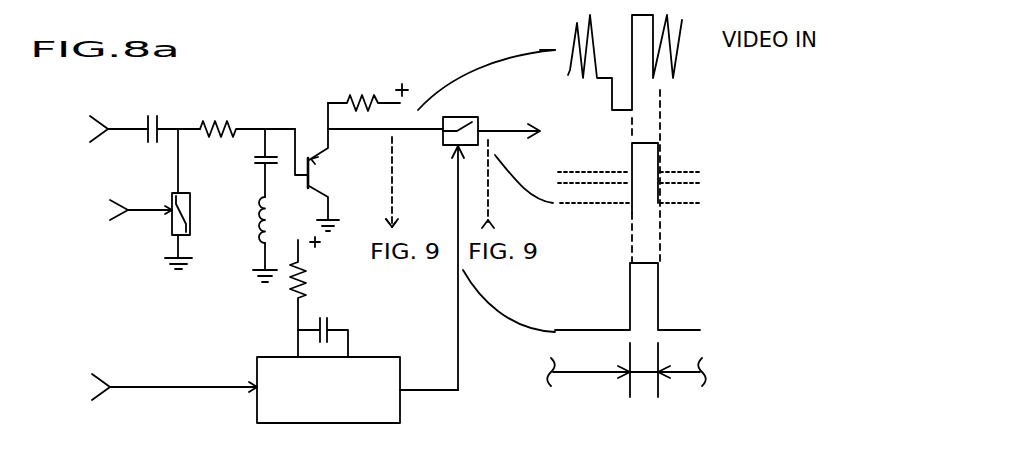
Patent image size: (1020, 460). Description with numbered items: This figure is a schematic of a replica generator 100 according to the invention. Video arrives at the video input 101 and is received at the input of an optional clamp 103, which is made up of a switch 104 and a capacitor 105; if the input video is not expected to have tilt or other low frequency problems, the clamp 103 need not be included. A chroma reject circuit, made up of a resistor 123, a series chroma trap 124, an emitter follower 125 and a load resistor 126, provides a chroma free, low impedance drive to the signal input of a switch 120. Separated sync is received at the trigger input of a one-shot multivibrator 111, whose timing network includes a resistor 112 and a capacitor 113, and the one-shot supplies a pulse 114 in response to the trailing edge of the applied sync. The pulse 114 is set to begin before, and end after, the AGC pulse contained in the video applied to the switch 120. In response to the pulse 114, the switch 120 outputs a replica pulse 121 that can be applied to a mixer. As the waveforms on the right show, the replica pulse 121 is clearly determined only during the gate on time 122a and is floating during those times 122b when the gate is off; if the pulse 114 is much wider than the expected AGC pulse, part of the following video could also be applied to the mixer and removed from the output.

The replica pulse clamp circuit 100 is at (158, 347).
The video input terminal 101 is at (107, 110).
The clamp 103 is at (127, 177).
The switch 104 is at (165, 199).
The capacitor 105 is at (157, 108).
The one-shot multivibrator 111 is at (270, 349).
The timing resistor 112 is at (316, 297).
The timing capacitor 113 is at (334, 328).
The pulse 114 is at (618, 270).
The switch 120 is at (443, 148).
The replica pulse 121 is at (618, 153).
The gate on time 122a is at (642, 375).
The times when the gate is off 122b is at (685, 373).
The resistor 123 is at (220, 113).
The series chroma trap 124 is at (253, 222).
The emitter follower 125 is at (324, 167).
The load resistor 126 is at (368, 87).